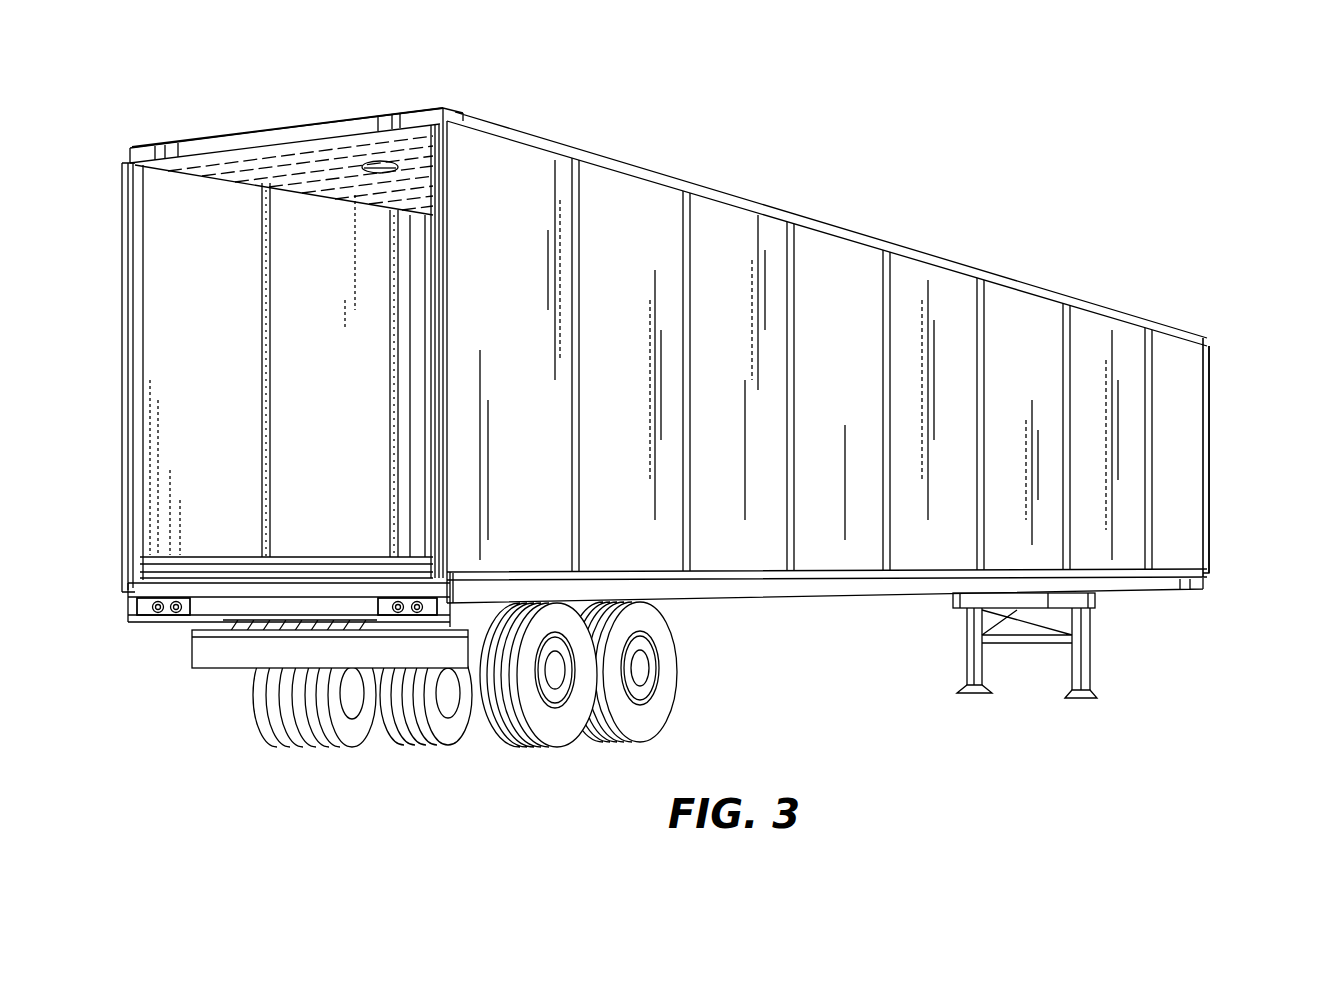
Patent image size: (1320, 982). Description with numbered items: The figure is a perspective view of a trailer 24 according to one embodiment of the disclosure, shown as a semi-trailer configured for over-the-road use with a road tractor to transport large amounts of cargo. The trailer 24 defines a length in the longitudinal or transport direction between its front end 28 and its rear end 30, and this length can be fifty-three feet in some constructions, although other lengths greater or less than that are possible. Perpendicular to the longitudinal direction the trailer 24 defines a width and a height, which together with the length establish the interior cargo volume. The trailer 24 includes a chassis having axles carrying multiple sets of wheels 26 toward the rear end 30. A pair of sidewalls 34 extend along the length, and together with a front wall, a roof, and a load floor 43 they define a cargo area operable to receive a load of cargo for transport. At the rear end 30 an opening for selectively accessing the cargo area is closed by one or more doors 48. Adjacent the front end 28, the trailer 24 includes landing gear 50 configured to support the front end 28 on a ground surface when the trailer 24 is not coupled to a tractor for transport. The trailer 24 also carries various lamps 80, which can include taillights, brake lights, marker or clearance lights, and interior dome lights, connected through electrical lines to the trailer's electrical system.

The trailer 24 is at (952, 237).
The wheels 26 is at (698, 680).
The front end 28 is at (1220, 415).
The rear end 30 is at (368, 103).
The sidewalls 34 is at (203, 217).
The load floor 43 is at (380, 572).
The doors 48 is at (310, 222).
The landing gear 50 is at (1150, 633).
The lamps 80 is at (380, 177).